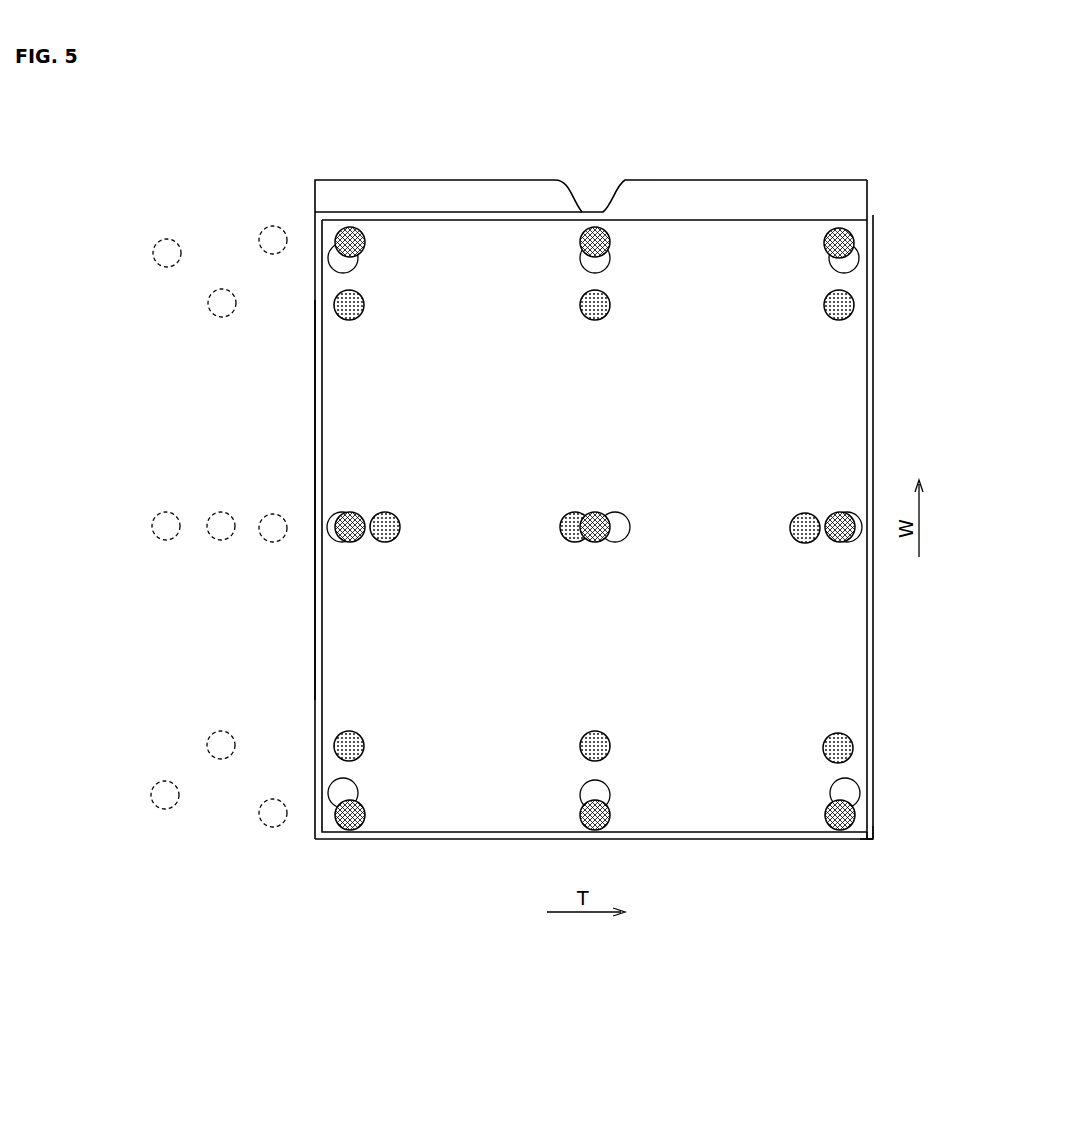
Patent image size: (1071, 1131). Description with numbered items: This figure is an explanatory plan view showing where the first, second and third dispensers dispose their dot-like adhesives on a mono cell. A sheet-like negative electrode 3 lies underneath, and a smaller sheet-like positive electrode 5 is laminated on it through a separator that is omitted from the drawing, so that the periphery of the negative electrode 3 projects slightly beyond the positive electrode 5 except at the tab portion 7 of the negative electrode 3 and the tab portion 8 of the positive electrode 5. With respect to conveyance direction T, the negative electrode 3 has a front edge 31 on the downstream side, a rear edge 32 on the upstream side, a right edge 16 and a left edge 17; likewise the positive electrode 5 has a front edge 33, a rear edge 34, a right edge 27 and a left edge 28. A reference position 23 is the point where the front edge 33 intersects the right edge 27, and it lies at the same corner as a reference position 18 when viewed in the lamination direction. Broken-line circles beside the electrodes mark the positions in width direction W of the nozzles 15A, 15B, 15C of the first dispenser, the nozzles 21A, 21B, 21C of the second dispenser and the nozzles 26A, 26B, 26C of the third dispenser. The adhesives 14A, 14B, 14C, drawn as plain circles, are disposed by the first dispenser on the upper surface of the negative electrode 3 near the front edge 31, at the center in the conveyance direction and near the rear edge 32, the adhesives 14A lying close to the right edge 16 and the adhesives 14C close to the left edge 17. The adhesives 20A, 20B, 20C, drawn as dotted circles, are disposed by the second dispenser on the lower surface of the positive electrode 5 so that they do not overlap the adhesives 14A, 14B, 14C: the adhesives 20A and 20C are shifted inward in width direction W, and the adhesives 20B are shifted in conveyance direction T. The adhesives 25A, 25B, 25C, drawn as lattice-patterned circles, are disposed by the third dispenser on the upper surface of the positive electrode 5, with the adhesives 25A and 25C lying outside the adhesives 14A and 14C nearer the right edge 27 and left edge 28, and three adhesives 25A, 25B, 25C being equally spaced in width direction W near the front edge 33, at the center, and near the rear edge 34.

The negative electrode 3 is at (347, 215).
The positive electrode 5 is at (742, 257).
The tab portion 7 is at (415, 197).
The tab portion 8 is at (795, 197).
The left edge 17 is at (493, 210).
The left edge 28 is at (690, 218).
The right edge 16 is at (508, 842).
The reference position 18 is at (876, 845).
The reference position 23 is at (875, 838).
The right edge 27 is at (440, 835).
The front edge 31 is at (873, 660).
The rear edge 32 is at (315, 614).
The front edge 33 is at (872, 313).
The rear edge 34 is at (315, 385).
The adhesive 14A is at (358, 788).
The adhesive 14B is at (340, 513).
The adhesive 14C is at (358, 262).
The adhesive 20A is at (365, 746).
The adhesive 20B is at (388, 512).
The adhesive 20C is at (365, 305).
The adhesive 25A is at (366, 815).
The adhesive 25B is at (357, 543).
The adhesive 25C is at (366, 243).
The nozzle 15A is at (162, 781).
The nozzle 15B is at (162, 512).
The nozzle 15C is at (165, 238).
The nozzle 21A is at (221, 730).
The nozzle 21B is at (217, 512).
The nozzle 21C is at (210, 312).
The nozzle 26A is at (272, 800).
The nozzle 26B is at (273, 514).
The nozzle 26C is at (270, 225).